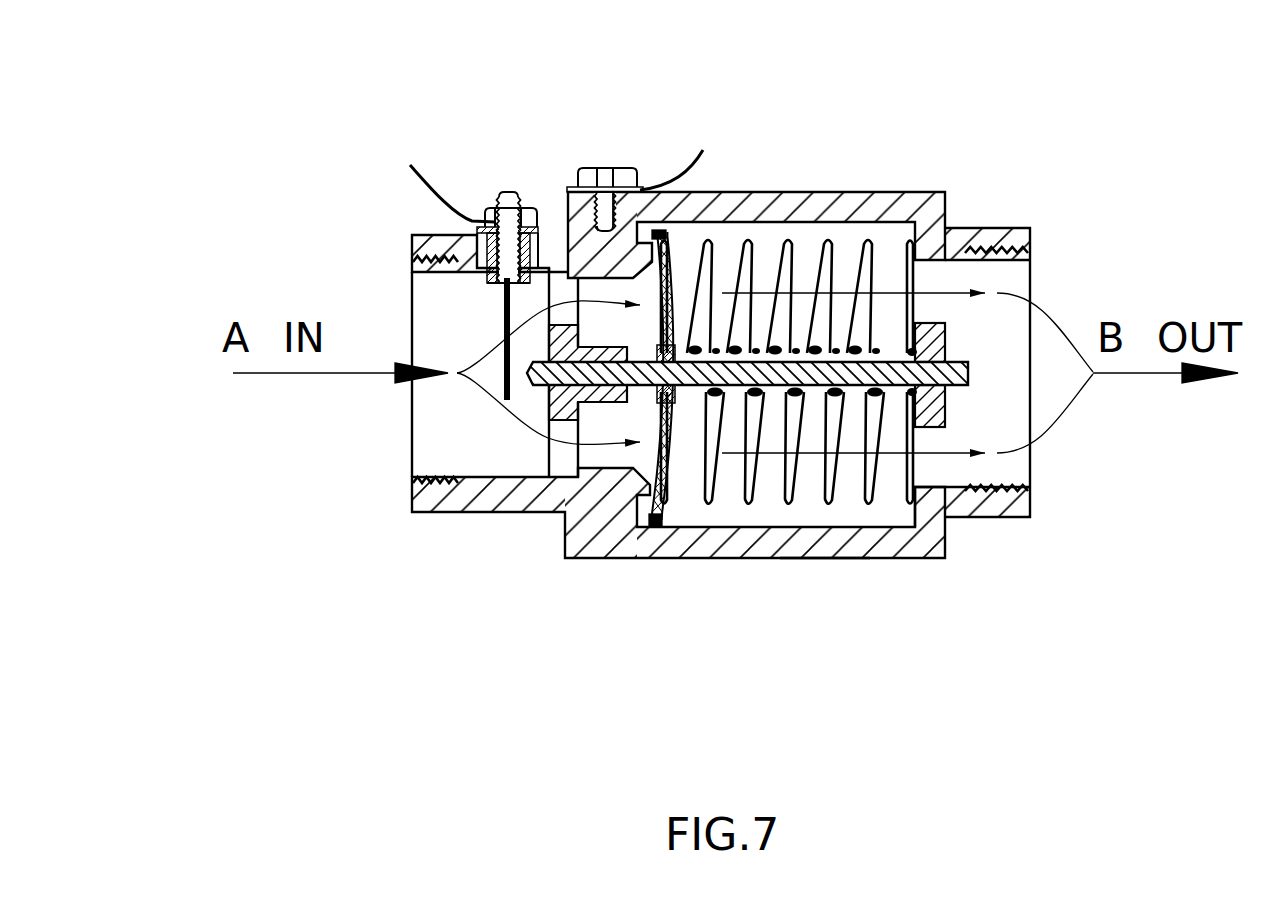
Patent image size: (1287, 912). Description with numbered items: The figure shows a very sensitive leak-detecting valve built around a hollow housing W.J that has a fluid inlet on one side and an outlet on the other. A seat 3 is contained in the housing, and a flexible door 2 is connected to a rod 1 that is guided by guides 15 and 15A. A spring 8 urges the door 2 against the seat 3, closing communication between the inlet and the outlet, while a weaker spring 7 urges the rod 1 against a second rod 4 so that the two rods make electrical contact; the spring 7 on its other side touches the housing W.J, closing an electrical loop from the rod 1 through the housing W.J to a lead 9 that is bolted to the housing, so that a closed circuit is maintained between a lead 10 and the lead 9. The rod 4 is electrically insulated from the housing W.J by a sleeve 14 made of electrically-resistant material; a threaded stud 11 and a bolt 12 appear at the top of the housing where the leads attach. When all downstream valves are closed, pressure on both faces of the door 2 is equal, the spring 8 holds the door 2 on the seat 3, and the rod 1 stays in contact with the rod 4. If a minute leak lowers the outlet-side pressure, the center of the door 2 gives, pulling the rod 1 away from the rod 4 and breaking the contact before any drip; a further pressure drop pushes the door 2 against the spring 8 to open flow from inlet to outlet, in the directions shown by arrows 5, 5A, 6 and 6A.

The rod 1 is at (539, 391).
The flexible door 2 is at (657, 517).
The seat 3 is at (647, 497).
The rod 4 is at (502, 347).
The arrow 5 is at (548, 422).
The arrow 6 is at (548, 326).
The arrow 5A is at (907, 429).
The arrow 6A is at (907, 317).
The spring 7 is at (893, 407).
The spring 8 is at (800, 224).
The lead 9 is at (704, 152).
The lead 10 is at (412, 168).
The terminal stud 11 is at (506, 189).
The terminal bolt 12 is at (604, 169).
The sleeve 14 is at (484, 263).
The guide 15 is at (565, 421).
The guide 15A is at (933, 422).
The hollow housing W.J is at (823, 558).